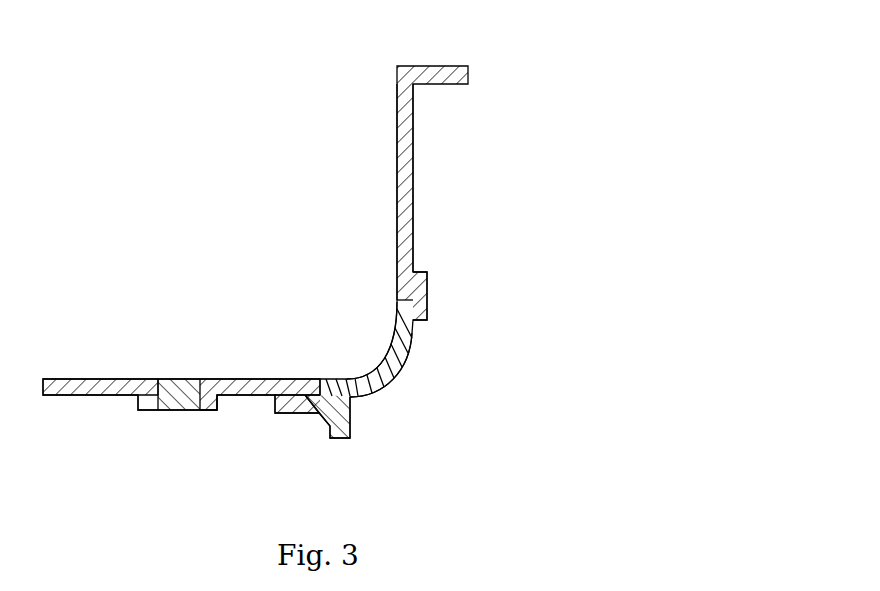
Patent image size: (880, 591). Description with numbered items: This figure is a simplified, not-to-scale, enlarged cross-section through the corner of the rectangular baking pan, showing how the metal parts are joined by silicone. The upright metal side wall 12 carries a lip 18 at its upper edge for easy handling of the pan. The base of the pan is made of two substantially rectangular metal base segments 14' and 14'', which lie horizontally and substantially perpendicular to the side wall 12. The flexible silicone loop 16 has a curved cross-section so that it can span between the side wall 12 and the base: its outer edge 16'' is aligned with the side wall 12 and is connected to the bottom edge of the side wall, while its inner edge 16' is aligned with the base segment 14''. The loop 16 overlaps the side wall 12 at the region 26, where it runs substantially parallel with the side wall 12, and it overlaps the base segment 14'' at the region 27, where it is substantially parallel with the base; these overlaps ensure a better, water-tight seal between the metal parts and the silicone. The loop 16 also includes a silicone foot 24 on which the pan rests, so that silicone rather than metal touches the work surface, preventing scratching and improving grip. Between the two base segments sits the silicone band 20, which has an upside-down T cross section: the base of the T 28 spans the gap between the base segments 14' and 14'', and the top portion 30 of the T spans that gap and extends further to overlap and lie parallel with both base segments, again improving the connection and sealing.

The side wall 12 is at (413, 148).
The base segment 14' is at (100, 351).
The base segment 14'' is at (260, 349).
The silicone loop 16 is at (411, 354).
The inner edge of the silicone loop 16' is at (293, 327).
The outer edge of the silicone loop 16'' is at (355, 254).
The lip 18 is at (457, 66).
The silicone band 20 is at (175, 410).
The feet 24 is at (350, 437).
The overlap with the side wall 26 is at (465, 298).
The overlap with the base 27 is at (313, 435).
The base of the T 28 is at (177, 378).
The top portion of the T 30 is at (138, 408).